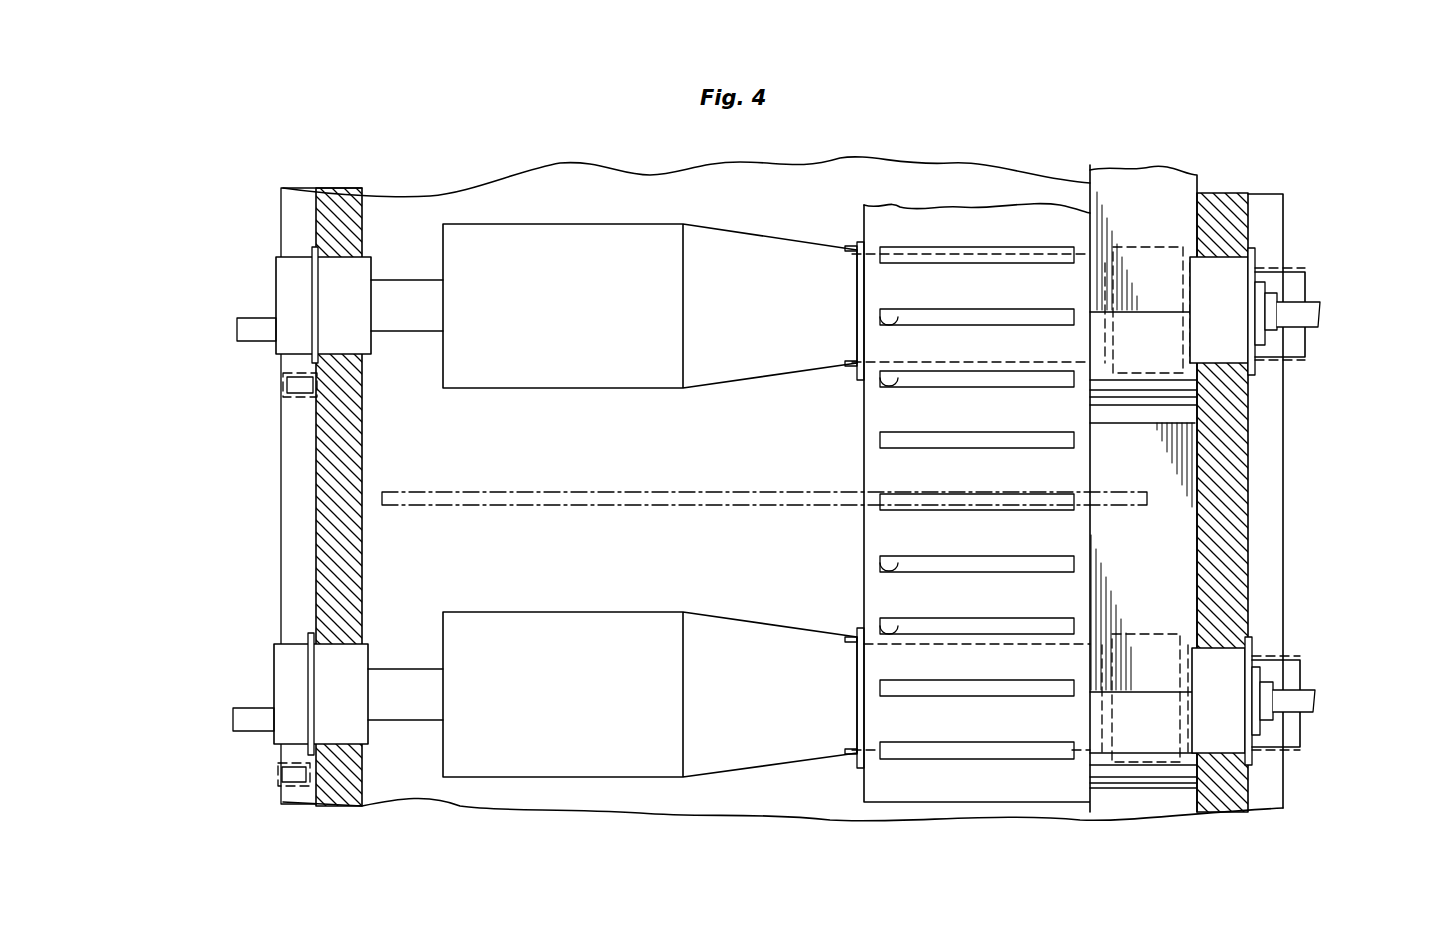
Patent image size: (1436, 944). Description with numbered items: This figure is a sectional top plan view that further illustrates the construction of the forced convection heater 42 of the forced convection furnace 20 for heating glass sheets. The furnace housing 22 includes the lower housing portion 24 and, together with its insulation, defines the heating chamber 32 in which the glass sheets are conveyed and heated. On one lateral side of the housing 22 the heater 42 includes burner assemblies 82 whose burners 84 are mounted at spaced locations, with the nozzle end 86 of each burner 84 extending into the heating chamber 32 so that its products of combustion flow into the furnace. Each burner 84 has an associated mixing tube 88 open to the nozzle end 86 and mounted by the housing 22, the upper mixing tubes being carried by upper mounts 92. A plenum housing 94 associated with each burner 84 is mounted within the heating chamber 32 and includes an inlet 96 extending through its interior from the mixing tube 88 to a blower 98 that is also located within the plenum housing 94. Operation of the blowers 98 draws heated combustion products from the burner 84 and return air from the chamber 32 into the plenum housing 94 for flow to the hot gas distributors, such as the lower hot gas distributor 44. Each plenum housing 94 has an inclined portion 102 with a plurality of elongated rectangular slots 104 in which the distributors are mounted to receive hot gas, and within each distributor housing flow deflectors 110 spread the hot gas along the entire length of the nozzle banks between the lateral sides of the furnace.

The forced convection furnace 20 is at (258, 175).
The housing 22 is at (1240, 192).
The lower housing portion 24 is at (1237, 813).
The heating chamber 32 is at (380, 453).
The forced convection heater 42 is at (818, 778).
The lower hot gas distributor 44 is at (714, 508).
The burner assembly 82 is at (265, 350).
The burner 84 is at (290, 268).
The nozzle end 86 is at (450, 322).
The mixing tube 88 is at (553, 224).
The upper mount 92 is at (935, 760).
The plenum housing 94 is at (1062, 208).
The inlet 96 is at (935, 247).
The blower 98 is at (1143, 248).
The inclined portion 102 is at (1003, 225).
The elongated rectangular slot 104 is at (882, 377).
The flow deflector 110 is at (1296, 310).